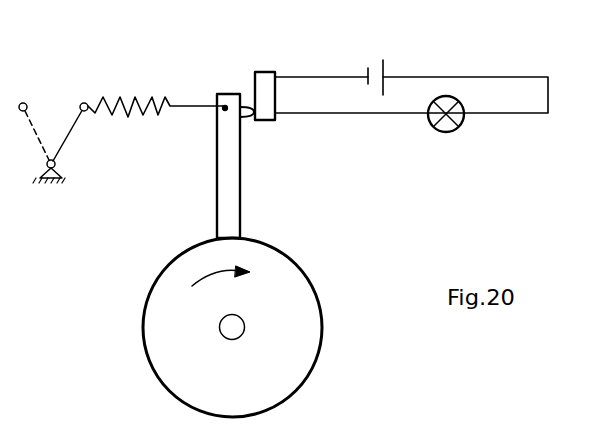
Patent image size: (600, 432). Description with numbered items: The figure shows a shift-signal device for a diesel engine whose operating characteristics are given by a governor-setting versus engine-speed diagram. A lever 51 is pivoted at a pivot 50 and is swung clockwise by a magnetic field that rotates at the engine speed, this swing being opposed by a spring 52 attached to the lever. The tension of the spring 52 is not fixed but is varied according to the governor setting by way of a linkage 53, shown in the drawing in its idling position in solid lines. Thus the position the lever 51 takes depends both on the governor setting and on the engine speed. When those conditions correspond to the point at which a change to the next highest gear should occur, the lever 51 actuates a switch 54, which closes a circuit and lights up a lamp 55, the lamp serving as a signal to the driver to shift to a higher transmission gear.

The pivot 50 is at (235, 325).
The lever 51 is at (233, 182).
The spring 52 is at (142, 112).
The linkage 53 is at (70, 135).
The switch 54 is at (267, 73).
The lamp 55 is at (462, 127).